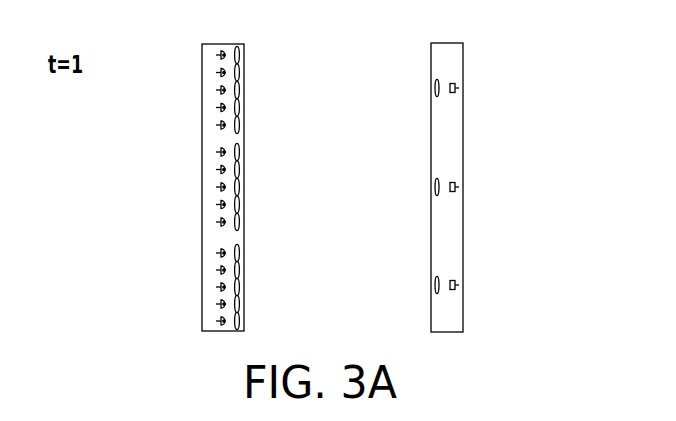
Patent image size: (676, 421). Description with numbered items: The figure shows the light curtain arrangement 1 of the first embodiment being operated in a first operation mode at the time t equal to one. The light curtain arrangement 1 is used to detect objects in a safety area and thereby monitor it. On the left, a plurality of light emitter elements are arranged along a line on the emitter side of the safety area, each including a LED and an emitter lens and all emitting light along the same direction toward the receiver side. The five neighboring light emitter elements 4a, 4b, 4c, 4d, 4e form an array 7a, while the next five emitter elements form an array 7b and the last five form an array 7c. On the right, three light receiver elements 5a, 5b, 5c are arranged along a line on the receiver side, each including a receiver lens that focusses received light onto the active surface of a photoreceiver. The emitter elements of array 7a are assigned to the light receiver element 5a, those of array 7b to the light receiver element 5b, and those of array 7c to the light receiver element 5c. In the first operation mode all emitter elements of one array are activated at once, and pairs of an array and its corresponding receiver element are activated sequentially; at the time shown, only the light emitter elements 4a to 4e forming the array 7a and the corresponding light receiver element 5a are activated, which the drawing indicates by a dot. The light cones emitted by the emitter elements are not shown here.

The light curtain arrangement 1 is at (549, 38).
The light emitter element 4a is at (216, 55).
The light emitter element 4b is at (216, 72).
The light emitter element 4c is at (216, 90).
The light emitter element 4d is at (216, 108).
The light emitter element 4e is at (216, 125).
The array 7a is at (153, 47).
The array 7b is at (153, 143).
The array 7c is at (153, 243).
The light receiver element 5a is at (459, 88).
The light receiver element 5b is at (459, 187).
The light receiver element 5c is at (459, 285).